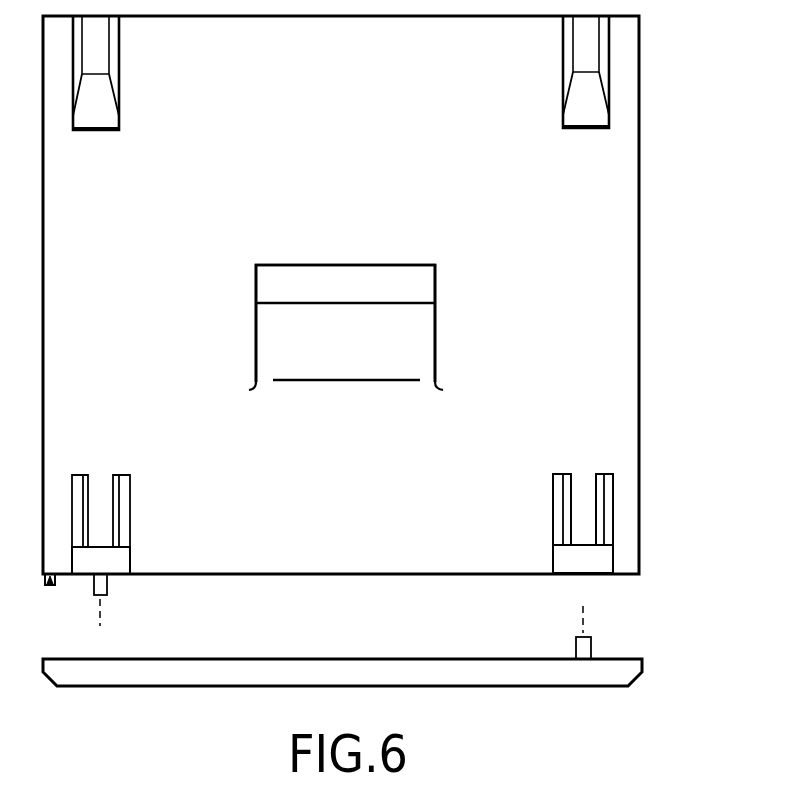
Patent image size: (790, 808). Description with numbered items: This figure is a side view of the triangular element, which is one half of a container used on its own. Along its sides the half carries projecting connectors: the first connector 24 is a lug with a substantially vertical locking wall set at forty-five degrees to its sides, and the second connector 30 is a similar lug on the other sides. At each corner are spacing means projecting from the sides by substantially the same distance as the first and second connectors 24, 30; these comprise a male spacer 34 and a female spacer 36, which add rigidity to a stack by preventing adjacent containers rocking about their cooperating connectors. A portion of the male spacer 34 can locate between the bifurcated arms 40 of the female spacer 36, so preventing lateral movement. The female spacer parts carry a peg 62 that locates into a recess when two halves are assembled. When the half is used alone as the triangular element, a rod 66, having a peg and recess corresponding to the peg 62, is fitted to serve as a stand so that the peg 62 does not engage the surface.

The first connector 24 is at (423, 328).
The second connector 30 is at (345, 323).
The male spacer 34 is at (593, 58).
The female spacer 36 is at (613, 532).
The bifurcated arms 40 is at (603, 474).
The peg 62 is at (107, 585).
The rod 66 is at (392, 658).